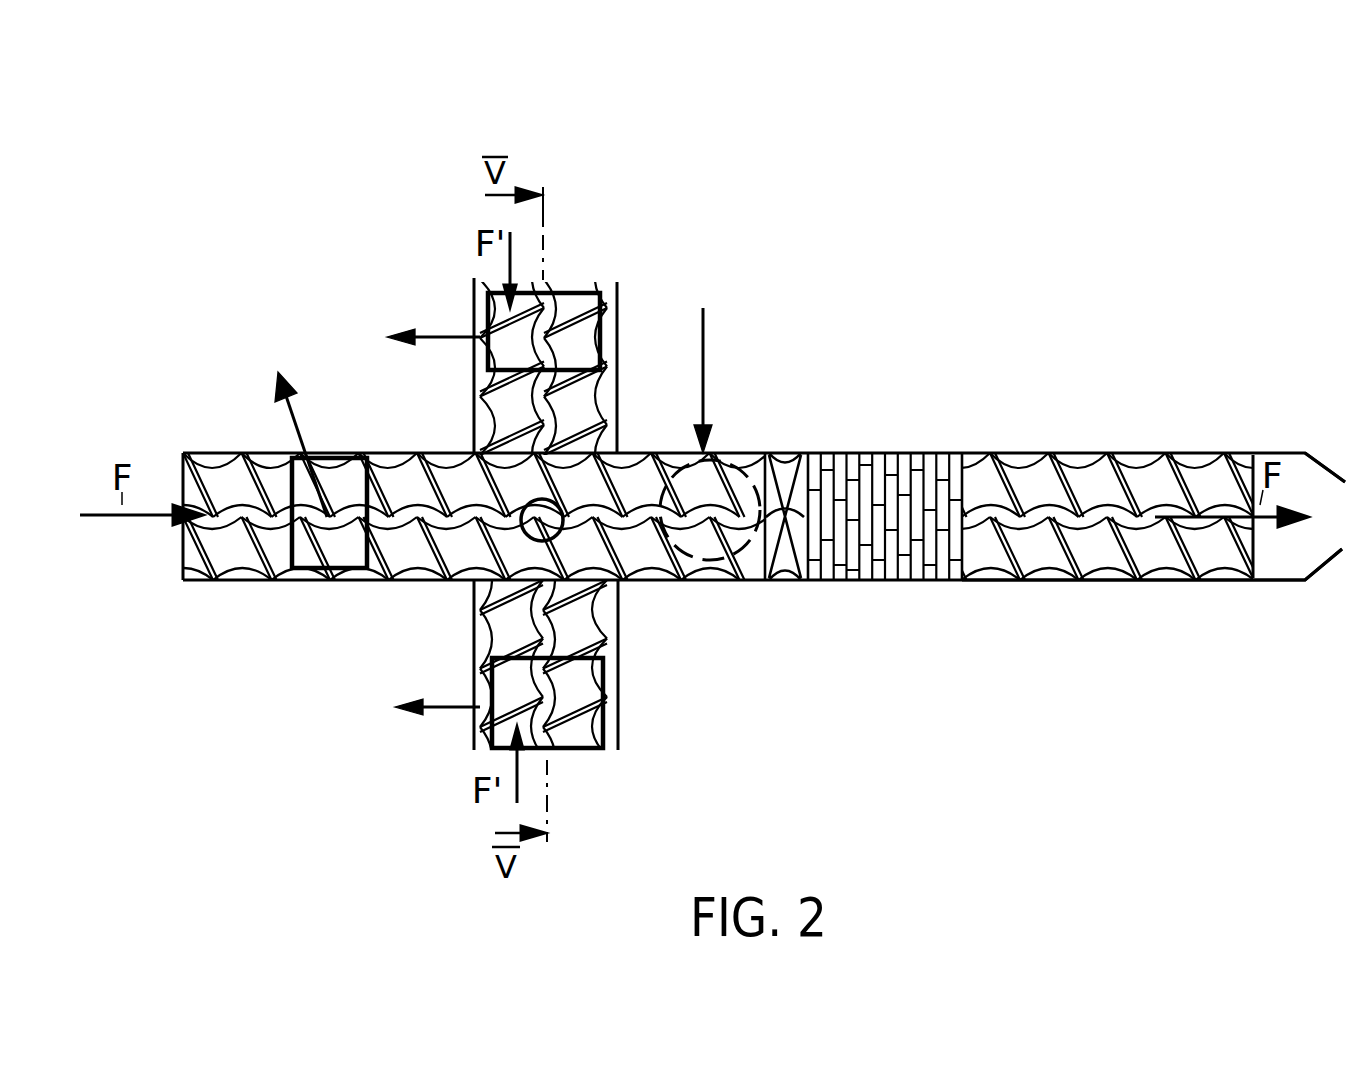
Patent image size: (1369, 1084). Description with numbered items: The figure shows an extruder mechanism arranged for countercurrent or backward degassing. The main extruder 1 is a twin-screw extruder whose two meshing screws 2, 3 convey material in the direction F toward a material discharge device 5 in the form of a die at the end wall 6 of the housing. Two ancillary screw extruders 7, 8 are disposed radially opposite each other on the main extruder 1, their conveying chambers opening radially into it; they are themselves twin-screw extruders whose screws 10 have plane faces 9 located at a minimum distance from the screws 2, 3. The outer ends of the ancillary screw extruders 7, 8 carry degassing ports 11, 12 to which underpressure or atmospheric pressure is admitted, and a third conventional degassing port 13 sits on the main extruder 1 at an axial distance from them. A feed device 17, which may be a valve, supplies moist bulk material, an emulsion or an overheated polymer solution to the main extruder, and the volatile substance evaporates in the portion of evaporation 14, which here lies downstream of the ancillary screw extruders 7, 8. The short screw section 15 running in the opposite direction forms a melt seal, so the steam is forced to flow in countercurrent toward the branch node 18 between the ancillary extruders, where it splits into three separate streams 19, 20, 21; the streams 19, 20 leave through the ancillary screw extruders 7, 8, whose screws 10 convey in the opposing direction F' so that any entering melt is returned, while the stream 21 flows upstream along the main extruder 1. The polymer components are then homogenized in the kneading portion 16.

The main extruder 1 is at (1095, 445).
The screw 2 is at (1025, 495).
The screw 3 is at (1040, 545).
The material discharge device 5 is at (1325, 517).
The tube end wall 6 is at (1222, 580).
The ancillary screw extruder 7 is at (628, 292).
The ancillary screw extruder 8 is at (630, 707).
The face 9 is at (575, 450).
The screw 10 is at (567, 420).
The degassing port 11 is at (575, 290).
The degassing port 12 is at (575, 748).
The degassing port 13 is at (318, 575).
The portion of evaporation 14 is at (708, 565).
The screw section 15 is at (792, 495).
The kneading portion 16 is at (875, 490).
The feed device 17 is at (707, 363).
The branch node 18 is at (565, 533).
The separate stream 19 is at (447, 335).
The separate stream 20 is at (452, 709).
The separate stream 21 is at (312, 421).